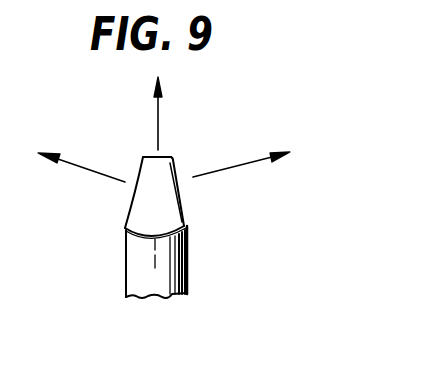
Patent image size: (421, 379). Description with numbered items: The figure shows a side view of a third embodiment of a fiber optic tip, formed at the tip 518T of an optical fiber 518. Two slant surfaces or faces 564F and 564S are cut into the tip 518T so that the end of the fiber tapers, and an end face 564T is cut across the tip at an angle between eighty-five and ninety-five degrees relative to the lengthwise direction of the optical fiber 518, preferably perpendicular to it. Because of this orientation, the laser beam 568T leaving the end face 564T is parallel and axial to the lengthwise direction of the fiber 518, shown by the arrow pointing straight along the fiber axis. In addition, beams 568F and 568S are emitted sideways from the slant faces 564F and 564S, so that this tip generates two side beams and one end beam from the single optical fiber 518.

The optical fiber 518 is at (133, 289).
The tip 518T is at (124, 239).
The end face 564T is at (143, 160).
The slant surface 564S is at (130, 213).
The slant face 564F is at (186, 140).
The laser beam 568T is at (158, 129).
The side beam 568S is at (90, 174).
The side beam 568F is at (221, 172).